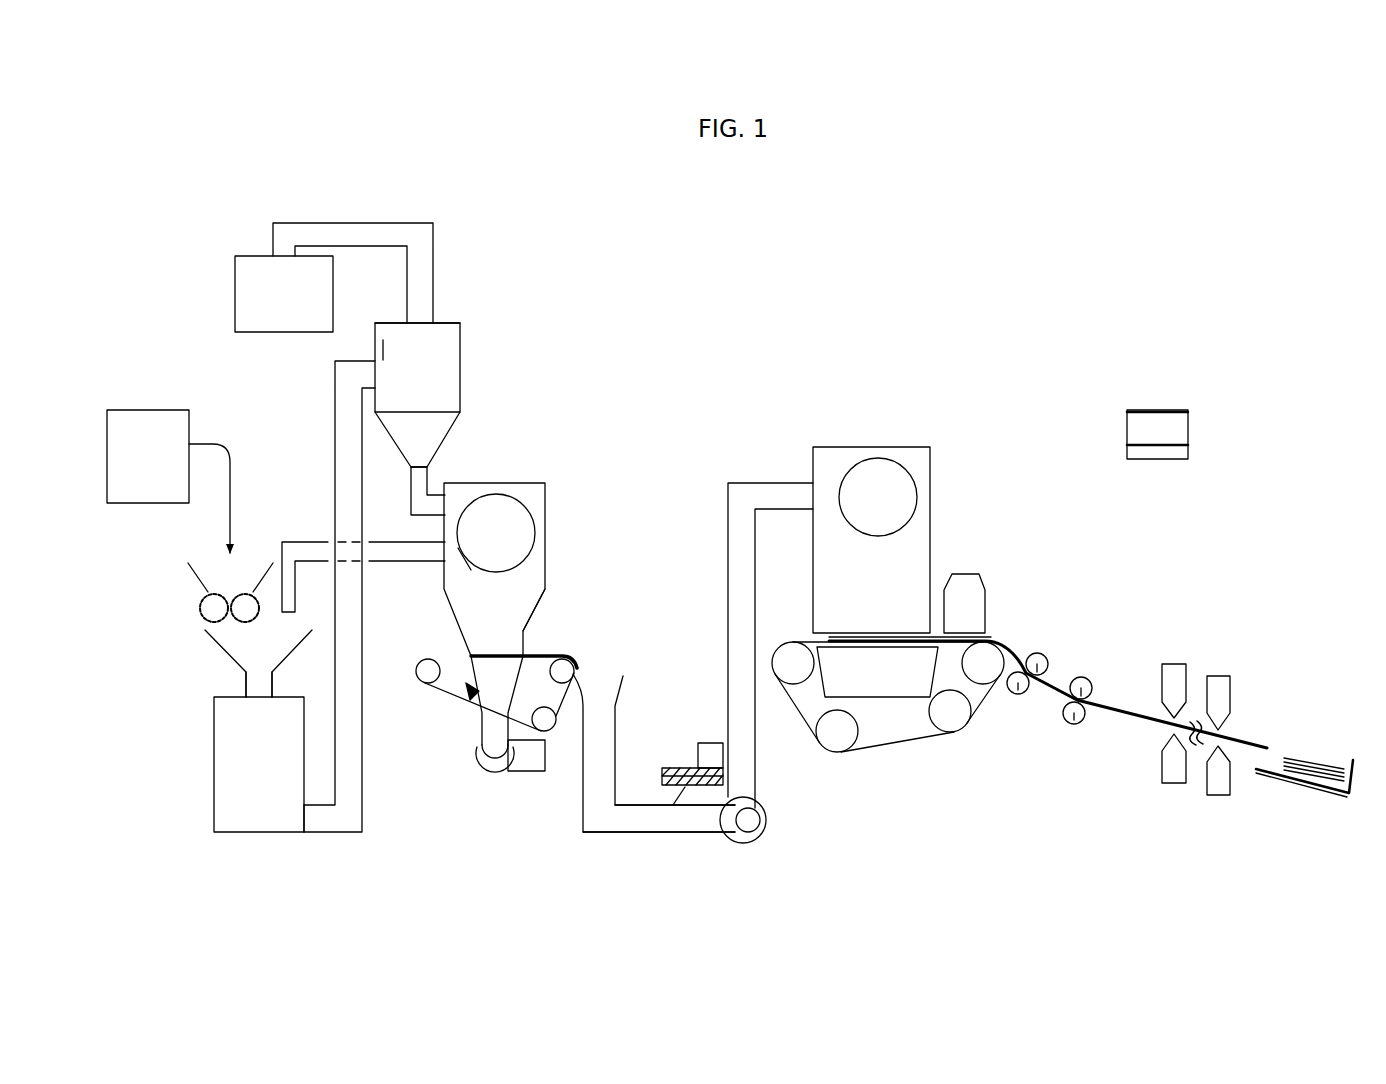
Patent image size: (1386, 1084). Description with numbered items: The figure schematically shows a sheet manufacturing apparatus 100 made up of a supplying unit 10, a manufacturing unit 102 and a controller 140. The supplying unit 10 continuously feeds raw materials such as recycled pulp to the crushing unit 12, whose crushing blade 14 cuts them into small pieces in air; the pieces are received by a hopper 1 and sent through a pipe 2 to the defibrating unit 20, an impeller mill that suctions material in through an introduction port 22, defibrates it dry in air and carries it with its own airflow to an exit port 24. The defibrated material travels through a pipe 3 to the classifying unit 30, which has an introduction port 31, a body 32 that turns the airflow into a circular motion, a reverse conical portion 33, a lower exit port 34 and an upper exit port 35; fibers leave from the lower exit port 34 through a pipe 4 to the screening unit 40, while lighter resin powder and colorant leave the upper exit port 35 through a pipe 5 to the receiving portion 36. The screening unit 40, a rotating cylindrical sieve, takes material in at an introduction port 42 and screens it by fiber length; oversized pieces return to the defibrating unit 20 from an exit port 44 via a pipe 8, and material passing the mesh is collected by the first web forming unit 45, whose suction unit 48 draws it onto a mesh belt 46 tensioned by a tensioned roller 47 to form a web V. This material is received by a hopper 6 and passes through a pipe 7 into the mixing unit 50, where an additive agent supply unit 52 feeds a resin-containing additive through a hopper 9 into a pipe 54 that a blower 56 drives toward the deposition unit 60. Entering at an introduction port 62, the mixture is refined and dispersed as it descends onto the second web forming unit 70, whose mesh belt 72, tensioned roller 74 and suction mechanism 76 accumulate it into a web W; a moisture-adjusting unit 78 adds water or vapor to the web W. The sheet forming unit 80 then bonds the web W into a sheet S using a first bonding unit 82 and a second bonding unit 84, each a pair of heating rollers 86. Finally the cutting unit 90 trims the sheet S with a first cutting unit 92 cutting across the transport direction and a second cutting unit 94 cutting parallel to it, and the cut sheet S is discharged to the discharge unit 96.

The hopper 1 is at (218, 646).
The pipe 2 is at (242, 683).
The pipe 3 is at (348, 713).
The pipe 4 is at (425, 505).
The pipe 5 is at (374, 238).
The hopper 6 is at (531, 609).
The pipe 7 is at (600, 743).
The pipe 8 is at (387, 553).
The hopper 9 is at (657, 803).
The supplying unit 10 is at (192, 405).
The crushing unit 12 is at (197, 578).
The crushing blade 14 is at (212, 606).
The defibrating unit 20 is at (229, 794).
The introduction port 22 is at (253, 703).
The exit port 24 is at (298, 818).
The classifying unit 30 is at (443, 374).
The introduction port 31 is at (383, 367).
The body 32 is at (448, 380).
The reverse conical portion 33 is at (430, 420).
The lower exit port 34 is at (423, 455).
The upper exit port 35 is at (418, 330).
The receiving portion 36 is at (258, 297).
The screening unit 40 is at (507, 626).
The introduction port 42 is at (476, 510).
The exit port 44 is at (462, 553).
The first web forming unit 45 is at (579, 646).
The mesh belt 46 is at (437, 654).
The tensioned roller 47 is at (423, 684).
The suction unit 48 is at (470, 697).
The mixing unit 50 is at (772, 842).
The additive agent supply unit 52 is at (710, 747).
The pipe 54 is at (742, 663).
The blower 56 is at (753, 828).
The deposition unit 60 is at (908, 512).
The introduction port 62 is at (849, 485).
The second web forming unit 70 is at (888, 705).
The mesh belt 72 is at (809, 634).
The tensioned roller 74 is at (795, 690).
The suction mechanism 76 is at (870, 679).
The moisture-adjusting unit 78 is at (963, 590).
The sheet forming unit 80 is at (1080, 681).
The first bonding unit 82 is at (1048, 648).
The second bonding unit 84 is at (1093, 681).
The heating rollers 86 is at (1037, 655).
The cutting unit 90 is at (1217, 689).
The first cutting unit 92 is at (1172, 653).
The second cutting unit 94 is at (1190, 611).
The discharge unit 96 is at (1335, 797).
The sheet manufacturing apparatus 100 is at (1111, 338).
The manufacturing unit 102 is at (1020, 403).
The controller 140 is at (1176, 420).
The web V is at (506, 650).
The web W is at (1005, 632).
The sheet S is at (1134, 706).